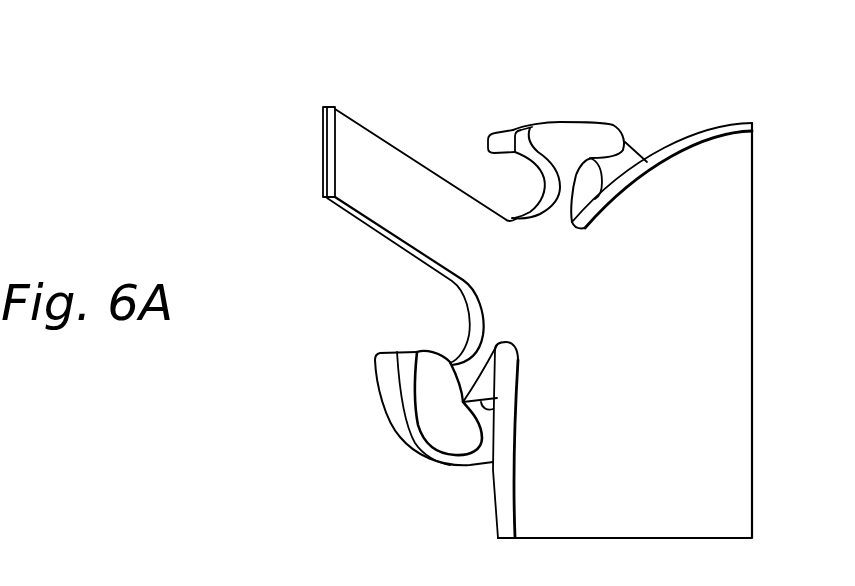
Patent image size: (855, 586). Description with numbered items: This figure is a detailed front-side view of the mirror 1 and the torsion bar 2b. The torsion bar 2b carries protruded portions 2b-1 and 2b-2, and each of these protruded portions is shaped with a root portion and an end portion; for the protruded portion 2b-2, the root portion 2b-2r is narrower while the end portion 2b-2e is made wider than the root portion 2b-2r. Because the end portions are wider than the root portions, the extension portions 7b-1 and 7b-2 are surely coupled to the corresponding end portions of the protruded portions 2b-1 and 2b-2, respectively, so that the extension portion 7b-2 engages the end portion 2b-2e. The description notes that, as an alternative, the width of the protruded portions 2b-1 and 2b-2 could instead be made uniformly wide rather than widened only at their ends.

The mirror 1 is at (732, 373).
The torsion bar 2b is at (365, 153).
The protruded portion 2b-1 is at (567, 175).
The protruded portion 2b-2 is at (382, 252).
The root portion 2b-2r is at (472, 362).
The end portion 2b-2e is at (422, 374).
The extension portion 7b-1 is at (498, 143).
The extension portion 7b-2 is at (397, 403).